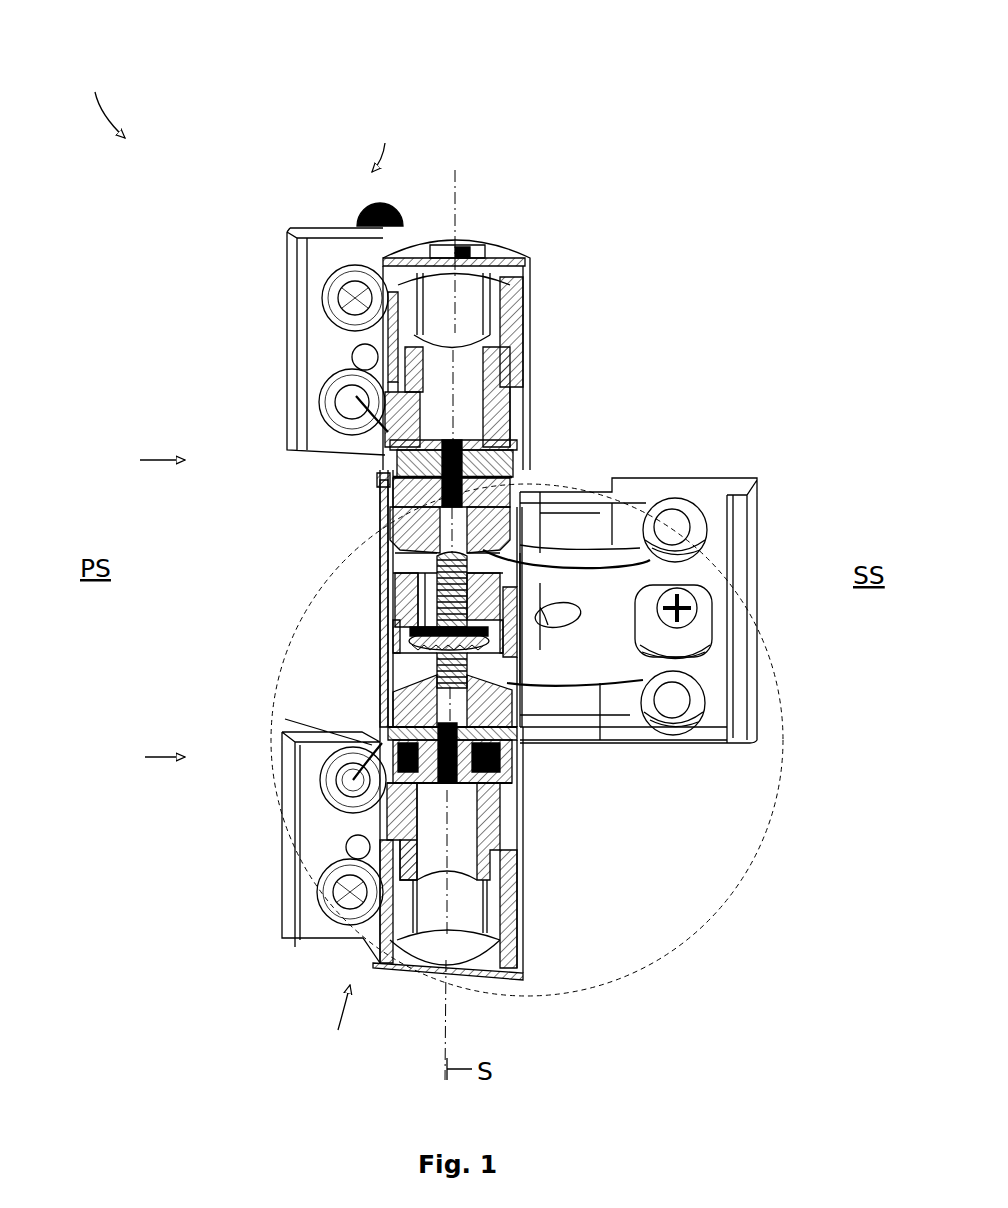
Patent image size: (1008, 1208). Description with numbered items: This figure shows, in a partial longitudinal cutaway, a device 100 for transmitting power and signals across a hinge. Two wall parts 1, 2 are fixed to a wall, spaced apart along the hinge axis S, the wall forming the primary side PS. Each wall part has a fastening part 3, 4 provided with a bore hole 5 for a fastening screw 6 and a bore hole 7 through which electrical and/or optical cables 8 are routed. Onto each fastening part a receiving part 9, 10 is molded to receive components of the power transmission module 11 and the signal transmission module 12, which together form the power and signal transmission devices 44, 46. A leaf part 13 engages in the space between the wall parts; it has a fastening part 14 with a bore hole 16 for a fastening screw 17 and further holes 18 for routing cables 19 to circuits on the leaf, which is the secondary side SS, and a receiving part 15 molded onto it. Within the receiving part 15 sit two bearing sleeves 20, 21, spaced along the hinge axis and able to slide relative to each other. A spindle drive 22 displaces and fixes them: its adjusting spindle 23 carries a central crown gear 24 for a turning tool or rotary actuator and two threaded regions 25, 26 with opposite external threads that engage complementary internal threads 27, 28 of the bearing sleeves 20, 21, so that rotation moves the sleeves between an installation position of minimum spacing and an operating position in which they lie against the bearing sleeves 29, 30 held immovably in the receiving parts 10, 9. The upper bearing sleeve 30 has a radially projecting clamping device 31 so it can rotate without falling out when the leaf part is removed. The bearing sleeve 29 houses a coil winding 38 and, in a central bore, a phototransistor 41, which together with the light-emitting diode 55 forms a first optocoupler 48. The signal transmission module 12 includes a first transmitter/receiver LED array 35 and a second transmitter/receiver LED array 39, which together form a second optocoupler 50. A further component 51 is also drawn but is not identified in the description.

The device 100 is at (97, 97).
The wall part 1 is at (383, 140).
The wall part 2 is at (339, 1024).
The fastening part 3 is at (312, 230).
The fastening part 4 is at (312, 935).
The bore hole 5 is at (328, 294).
The fastening screw 6 is at (345, 322).
The bore hole 7 is at (350, 410).
The electrical and/or optical cables 8 is at (380, 428).
The receiving part 9 is at (530, 335).
The receiving part 10 is at (525, 918).
The power transmission module 11 is at (548, 795).
The signal transmission module 12 is at (545, 460).
The leaf part 13 is at (805, 432).
The fastening part 14 is at (708, 728).
The receiving part 15 is at (355, 530).
The bore hole 16 is at (690, 636).
The fastening screw 17 is at (692, 600).
The holes 18 is at (707, 522).
The electrical and/or optical cables 19 is at (597, 547).
The bearing sleeve 20 is at (370, 510).
The bearing sleeve 21 is at (385, 705).
The spindle drive 22 is at (362, 637).
The adjusting spindle 23 is at (385, 607).
The crown gear 24 is at (432, 660).
The threaded region 25 is at (470, 652).
The threaded region 26 is at (435, 575).
The internal thread 27 is at (522, 538).
The internal thread 28 is at (522, 690).
The bearing sleeve 29 is at (525, 856).
The bearing sleeve 30 is at (528, 408).
The clamping device 31 is at (522, 368).
The first transmitter/receiver LED array 35 is at (528, 432).
The coil winding 38 is at (520, 775).
The second transmitter/receiver LED array 39 is at (530, 477).
The phototransistor 41 is at (522, 828).
The power and signal transmission device 44 is at (129, 758).
The power and signal transmission device 46 is at (139, 461).
The first optocoupler 48 is at (447, 786).
The second optocoupler 50 is at (451, 440).
The support surface 51 is at (380, 722).
The light-emitting diode 55 is at (520, 748).